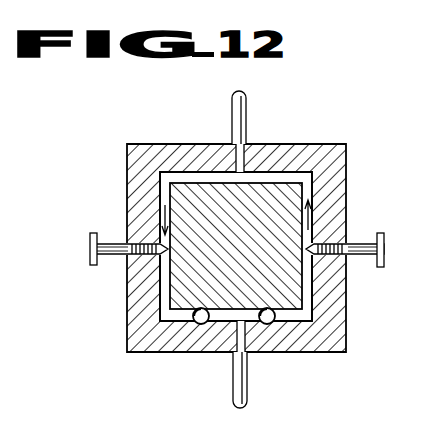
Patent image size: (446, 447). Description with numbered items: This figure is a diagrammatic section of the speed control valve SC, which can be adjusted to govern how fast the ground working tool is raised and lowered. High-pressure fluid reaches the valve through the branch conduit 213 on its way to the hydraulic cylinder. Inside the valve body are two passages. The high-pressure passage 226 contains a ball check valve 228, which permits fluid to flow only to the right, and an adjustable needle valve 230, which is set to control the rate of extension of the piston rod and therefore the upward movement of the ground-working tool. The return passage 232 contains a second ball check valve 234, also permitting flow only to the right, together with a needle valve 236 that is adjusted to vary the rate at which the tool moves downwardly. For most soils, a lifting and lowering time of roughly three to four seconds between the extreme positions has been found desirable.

The speed control valve SC is at (313, 143).
The branch conduit 213 is at (230, 106).
The return passage 232 is at (161, 182).
The high-pressure passage 226 is at (312, 288).
The adjustable needle valve 230 is at (357, 243).
The needle valve 236 is at (118, 260).
The ball check valve 234 is at (204, 325).
The ball check valve 228 is at (269, 325).